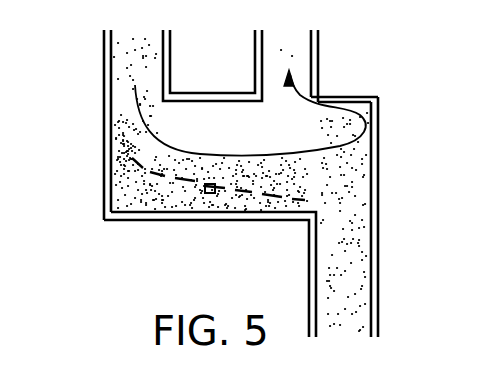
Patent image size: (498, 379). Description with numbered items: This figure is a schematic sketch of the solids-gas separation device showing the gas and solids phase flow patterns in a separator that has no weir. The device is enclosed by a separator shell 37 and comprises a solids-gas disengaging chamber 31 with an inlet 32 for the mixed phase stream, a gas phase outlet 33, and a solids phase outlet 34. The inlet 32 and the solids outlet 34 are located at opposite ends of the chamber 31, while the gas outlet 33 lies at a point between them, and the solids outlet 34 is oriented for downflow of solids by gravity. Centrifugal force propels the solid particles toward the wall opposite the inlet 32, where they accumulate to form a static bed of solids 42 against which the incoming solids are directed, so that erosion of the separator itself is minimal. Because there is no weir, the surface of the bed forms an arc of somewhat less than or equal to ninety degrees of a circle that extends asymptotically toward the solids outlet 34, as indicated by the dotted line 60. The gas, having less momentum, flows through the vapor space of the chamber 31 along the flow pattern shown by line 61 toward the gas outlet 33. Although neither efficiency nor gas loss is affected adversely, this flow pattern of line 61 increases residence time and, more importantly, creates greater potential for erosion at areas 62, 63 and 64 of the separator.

The solids-gas disengaging chamber 31 is at (211, 135).
The inlet 32 is at (132, 43).
The gas phase outlet 33 is at (290, 45).
The solids phase outlet 34 is at (350, 275).
The separator shell 37 is at (107, 192).
The static bed of solids 42 is at (142, 208).
The dotted line 60 is at (219, 210).
The flow pattern line 61 is at (250, 155).
The erosion area 62 is at (307, 218).
The erosion area 63 is at (366, 133).
The erosion area 64 is at (320, 93).